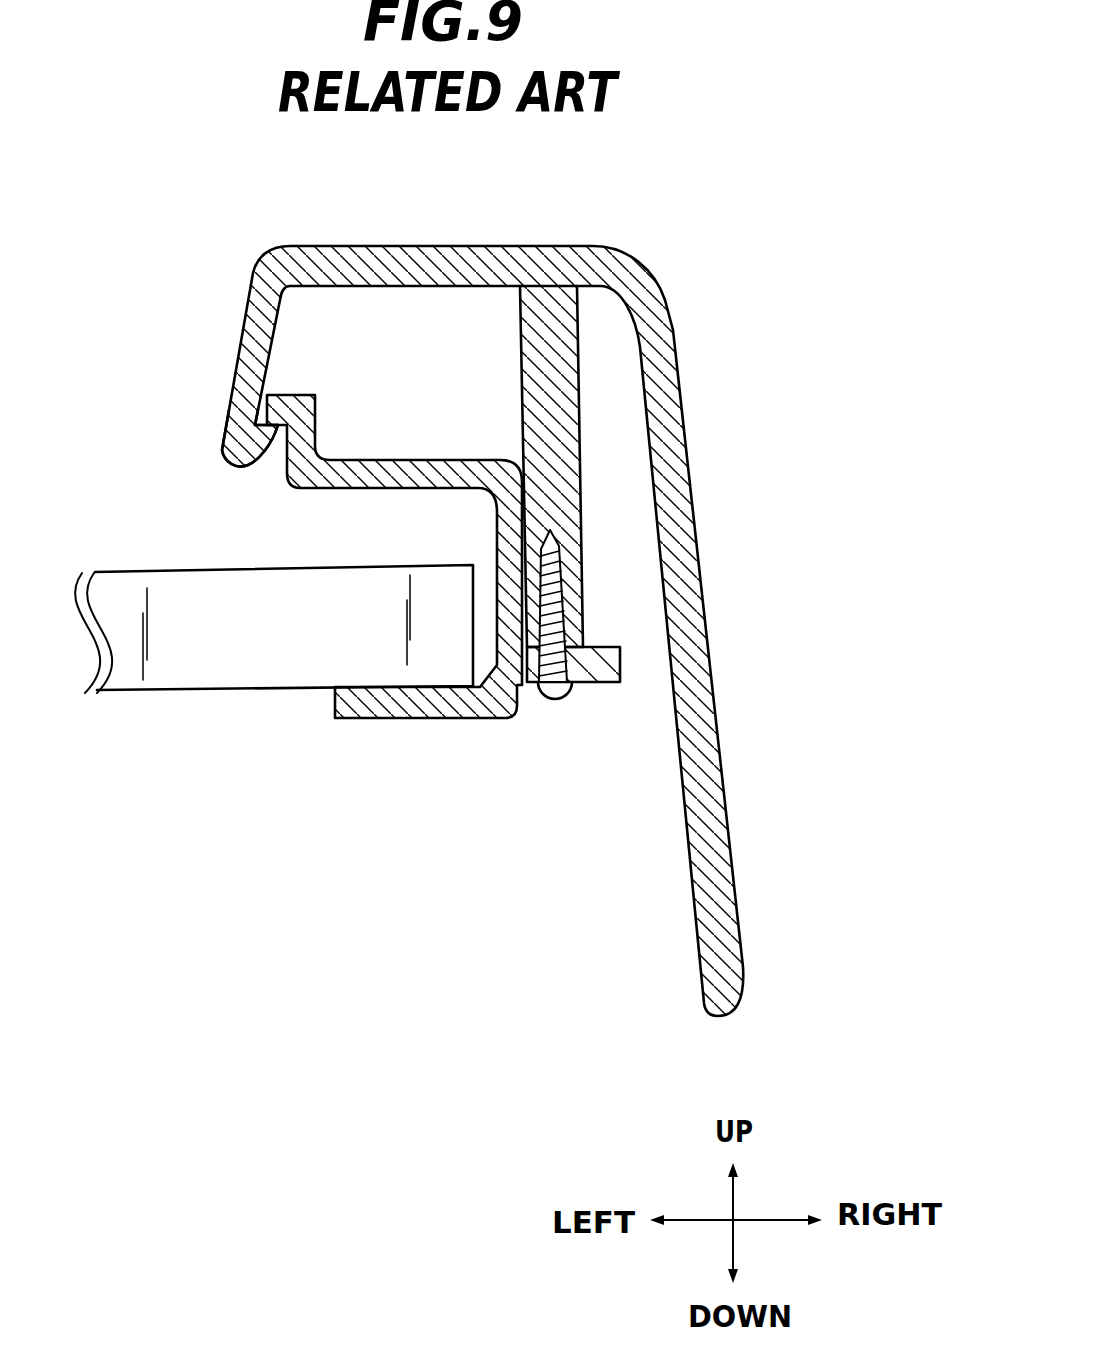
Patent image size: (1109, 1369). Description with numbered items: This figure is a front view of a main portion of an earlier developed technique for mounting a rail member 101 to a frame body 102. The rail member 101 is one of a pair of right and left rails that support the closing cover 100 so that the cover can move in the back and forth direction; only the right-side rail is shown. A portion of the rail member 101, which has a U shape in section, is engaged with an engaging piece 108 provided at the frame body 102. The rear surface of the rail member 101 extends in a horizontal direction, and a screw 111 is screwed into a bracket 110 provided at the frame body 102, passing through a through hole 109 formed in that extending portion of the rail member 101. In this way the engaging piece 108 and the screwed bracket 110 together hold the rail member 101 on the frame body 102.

The closing cover 100 is at (233, 683).
The rail member 101 is at (390, 718).
The frame body 102 is at (677, 372).
The engaging piece 108 is at (223, 443).
The through hole 109 is at (588, 686).
The bracket 110 is at (567, 498).
The screw 111 is at (553, 703).